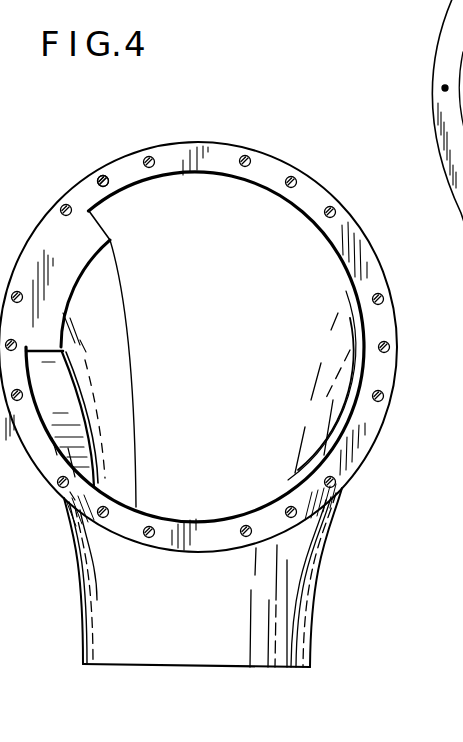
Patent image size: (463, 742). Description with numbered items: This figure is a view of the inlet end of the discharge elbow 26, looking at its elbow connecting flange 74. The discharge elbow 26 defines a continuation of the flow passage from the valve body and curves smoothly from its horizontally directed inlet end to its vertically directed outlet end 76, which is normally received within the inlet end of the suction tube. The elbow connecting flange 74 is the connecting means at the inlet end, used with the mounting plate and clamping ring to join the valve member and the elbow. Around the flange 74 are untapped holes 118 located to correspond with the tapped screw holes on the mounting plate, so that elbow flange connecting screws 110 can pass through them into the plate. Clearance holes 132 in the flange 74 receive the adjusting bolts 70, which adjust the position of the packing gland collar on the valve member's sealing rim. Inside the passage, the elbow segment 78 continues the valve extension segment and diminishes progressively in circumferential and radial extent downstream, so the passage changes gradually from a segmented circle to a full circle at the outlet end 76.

The discharge elbow 26 is at (279, 150).
The elbow connecting flange 74 is at (397, 377).
The elbow flange connecting screws 110 is at (262, 207).
The adjusting bolts 70 is at (103, 176).
The clearance holes 132 is at (97, 182).
The untapped holes 118 is at (325, 212).
The elbow segment 78 is at (100, 303).
The outlet end 76 is at (158, 667).